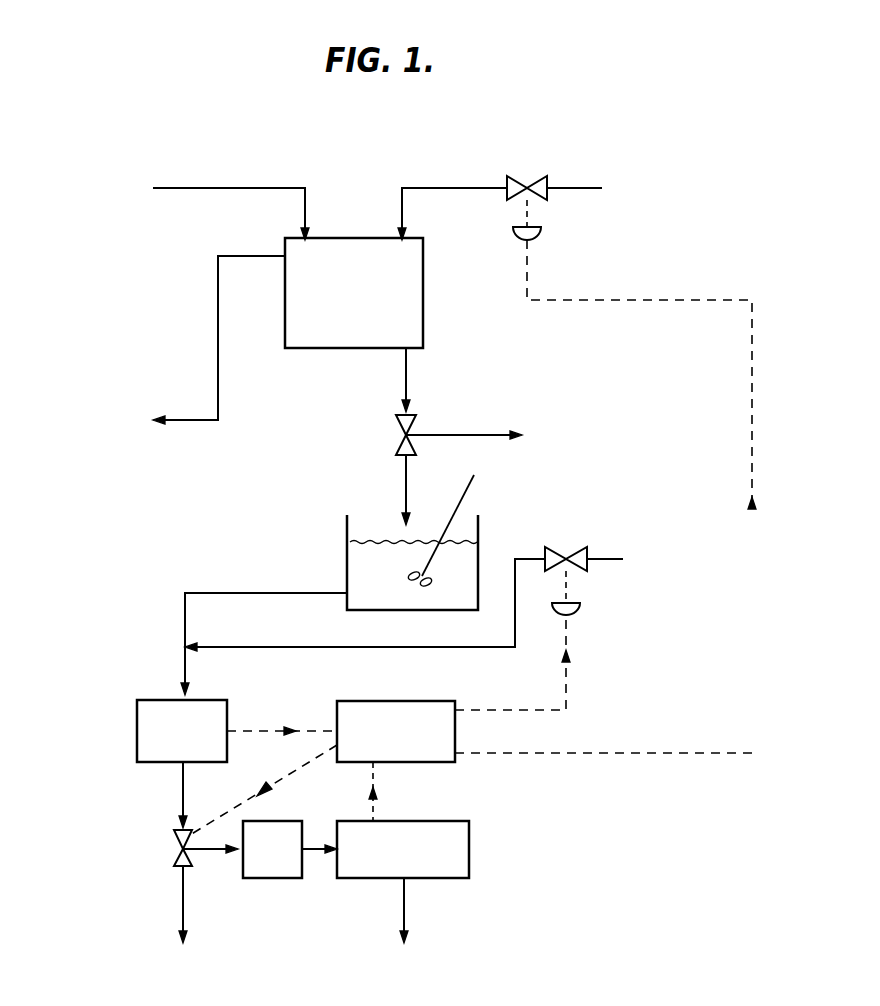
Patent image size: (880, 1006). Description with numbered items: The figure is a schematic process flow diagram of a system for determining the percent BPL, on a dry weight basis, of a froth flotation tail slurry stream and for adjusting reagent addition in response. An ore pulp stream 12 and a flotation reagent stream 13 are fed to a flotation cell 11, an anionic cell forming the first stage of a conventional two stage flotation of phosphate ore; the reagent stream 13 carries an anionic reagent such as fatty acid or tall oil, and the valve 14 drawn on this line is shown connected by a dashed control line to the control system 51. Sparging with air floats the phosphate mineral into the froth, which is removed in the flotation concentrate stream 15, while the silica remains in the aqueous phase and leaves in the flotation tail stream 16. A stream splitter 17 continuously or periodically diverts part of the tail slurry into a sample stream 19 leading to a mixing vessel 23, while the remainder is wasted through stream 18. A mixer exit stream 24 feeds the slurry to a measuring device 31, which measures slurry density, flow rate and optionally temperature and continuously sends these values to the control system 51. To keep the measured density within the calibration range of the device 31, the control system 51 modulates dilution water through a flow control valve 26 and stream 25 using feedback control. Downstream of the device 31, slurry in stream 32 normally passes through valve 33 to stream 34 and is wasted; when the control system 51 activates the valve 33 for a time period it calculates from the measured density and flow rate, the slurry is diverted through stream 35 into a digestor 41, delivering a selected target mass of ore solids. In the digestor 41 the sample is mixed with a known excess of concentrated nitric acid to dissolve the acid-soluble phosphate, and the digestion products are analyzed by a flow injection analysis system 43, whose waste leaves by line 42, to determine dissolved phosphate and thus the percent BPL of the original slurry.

The flotation cell 11 is at (423, 303).
The ore pulp stream 12 is at (230, 188).
The flotation reagent stream 13 is at (447, 188).
The reagent control valve 14 is at (543, 178).
The flotation concentrate stream 15 is at (218, 306).
The flotation tail stream 16 is at (404, 382).
The stream splitter 17 is at (400, 430).
The waste stream 18 is at (473, 433).
The sample stream 19 is at (404, 486).
The mixing vessel 23 is at (346, 555).
The mixer exit stream 24 is at (232, 592).
The dilution water stream 25 is at (262, 648).
The flow control valve 26 is at (572, 552).
The measuring device 31 is at (137, 725).
The slurry stream 32 is at (183, 796).
The valve 33 is at (176, 853).
The waste stream 34 is at (181, 912).
The digestor feed stream 35 is at (210, 851).
The digestor 41 is at (265, 880).
The analyzer waste line 42 is at (405, 893).
The flow injection analysis system 43 is at (470, 838).
The control system 51 is at (433, 700).